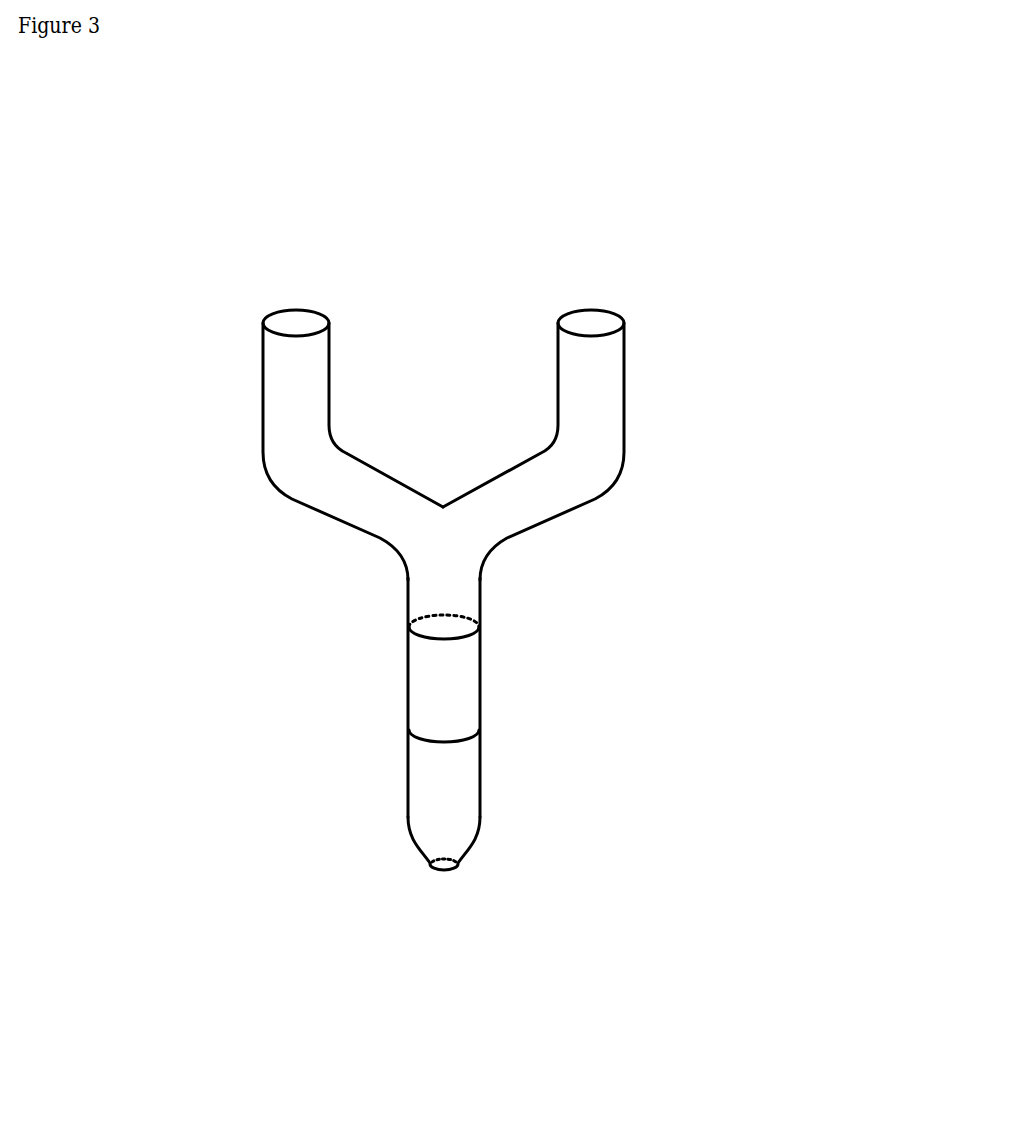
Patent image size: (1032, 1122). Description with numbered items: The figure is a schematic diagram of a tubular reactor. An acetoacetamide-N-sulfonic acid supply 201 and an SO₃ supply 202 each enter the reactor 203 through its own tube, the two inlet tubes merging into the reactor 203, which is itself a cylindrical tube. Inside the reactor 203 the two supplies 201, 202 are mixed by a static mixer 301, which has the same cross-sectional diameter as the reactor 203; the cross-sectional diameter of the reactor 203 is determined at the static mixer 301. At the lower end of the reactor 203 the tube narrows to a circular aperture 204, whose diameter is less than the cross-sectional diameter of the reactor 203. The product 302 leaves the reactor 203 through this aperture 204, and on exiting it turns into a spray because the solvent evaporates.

The acetoacetamide-N-sulfonic acid supply 201 is at (348, 352).
The SO₃ supply 202 is at (546, 352).
The reactor 203 is at (408, 720).
The static mixer 301 is at (453, 677).
The circular aperture 204 is at (457, 863).
The product 302 is at (428, 973).